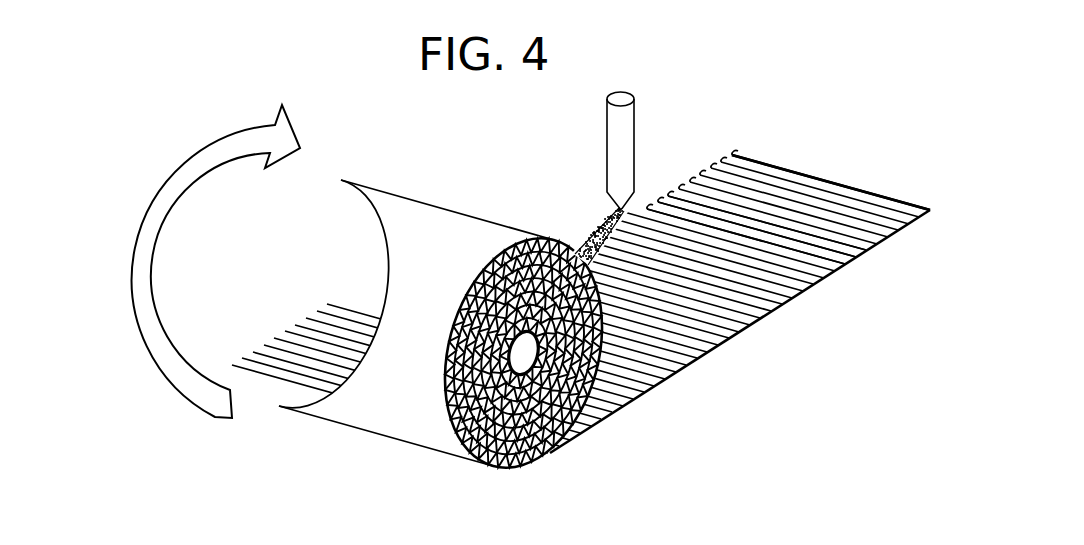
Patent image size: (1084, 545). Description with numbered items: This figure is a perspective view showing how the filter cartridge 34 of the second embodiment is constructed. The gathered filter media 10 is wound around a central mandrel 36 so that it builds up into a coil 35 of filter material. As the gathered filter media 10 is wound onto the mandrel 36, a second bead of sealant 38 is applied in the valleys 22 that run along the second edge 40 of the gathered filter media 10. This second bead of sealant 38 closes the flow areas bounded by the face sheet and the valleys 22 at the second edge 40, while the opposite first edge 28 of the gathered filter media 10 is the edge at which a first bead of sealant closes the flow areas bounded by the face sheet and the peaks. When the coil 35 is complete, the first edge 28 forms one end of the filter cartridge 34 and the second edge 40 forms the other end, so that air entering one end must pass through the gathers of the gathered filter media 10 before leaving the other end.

The gathered filter media 10 is at (792, 180).
The valleys 22 is at (683, 187).
The first edge 28 is at (793, 297).
The filter cartridge 34 is at (403, 178).
The coil 35 is at (357, 410).
The central mandrel 36 is at (538, 455).
The second bead of sealant 38 is at (590, 237).
The second edge 40 is at (717, 157).